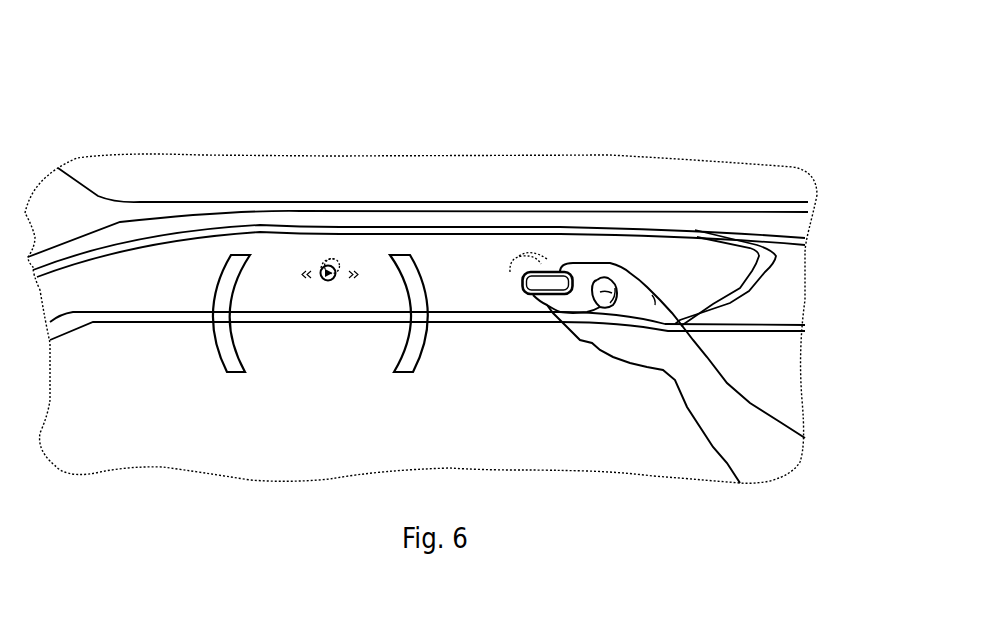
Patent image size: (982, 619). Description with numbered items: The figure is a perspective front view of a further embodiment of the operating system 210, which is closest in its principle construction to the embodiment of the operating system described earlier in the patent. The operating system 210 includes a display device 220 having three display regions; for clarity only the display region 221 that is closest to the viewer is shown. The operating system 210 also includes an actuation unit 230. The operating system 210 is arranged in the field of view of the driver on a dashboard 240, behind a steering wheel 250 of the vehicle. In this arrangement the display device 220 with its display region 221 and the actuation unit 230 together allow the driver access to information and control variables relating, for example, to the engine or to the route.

The operating system 210 is at (709, 145).
The display device 220 is at (323, 283).
The display region 221 is at (345, 337).
The actuation unit 230 is at (533, 295).
The dashboard 240 is at (510, 218).
The steering wheel 250 is at (217, 350).